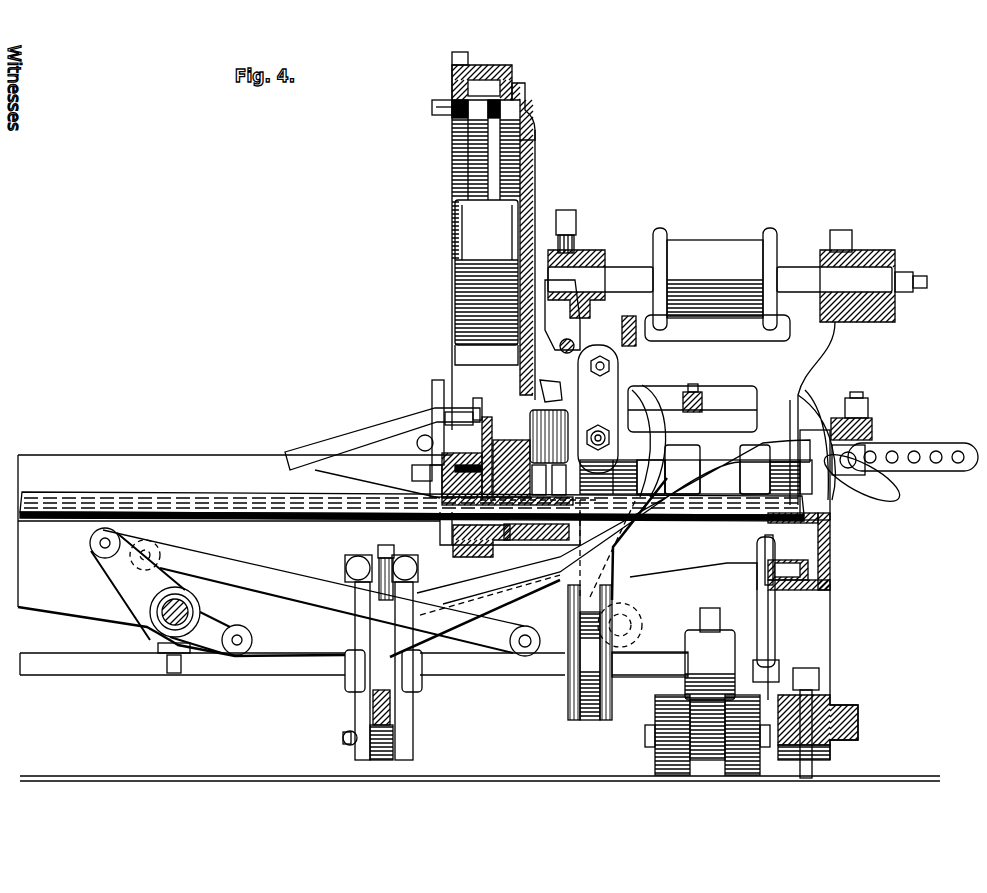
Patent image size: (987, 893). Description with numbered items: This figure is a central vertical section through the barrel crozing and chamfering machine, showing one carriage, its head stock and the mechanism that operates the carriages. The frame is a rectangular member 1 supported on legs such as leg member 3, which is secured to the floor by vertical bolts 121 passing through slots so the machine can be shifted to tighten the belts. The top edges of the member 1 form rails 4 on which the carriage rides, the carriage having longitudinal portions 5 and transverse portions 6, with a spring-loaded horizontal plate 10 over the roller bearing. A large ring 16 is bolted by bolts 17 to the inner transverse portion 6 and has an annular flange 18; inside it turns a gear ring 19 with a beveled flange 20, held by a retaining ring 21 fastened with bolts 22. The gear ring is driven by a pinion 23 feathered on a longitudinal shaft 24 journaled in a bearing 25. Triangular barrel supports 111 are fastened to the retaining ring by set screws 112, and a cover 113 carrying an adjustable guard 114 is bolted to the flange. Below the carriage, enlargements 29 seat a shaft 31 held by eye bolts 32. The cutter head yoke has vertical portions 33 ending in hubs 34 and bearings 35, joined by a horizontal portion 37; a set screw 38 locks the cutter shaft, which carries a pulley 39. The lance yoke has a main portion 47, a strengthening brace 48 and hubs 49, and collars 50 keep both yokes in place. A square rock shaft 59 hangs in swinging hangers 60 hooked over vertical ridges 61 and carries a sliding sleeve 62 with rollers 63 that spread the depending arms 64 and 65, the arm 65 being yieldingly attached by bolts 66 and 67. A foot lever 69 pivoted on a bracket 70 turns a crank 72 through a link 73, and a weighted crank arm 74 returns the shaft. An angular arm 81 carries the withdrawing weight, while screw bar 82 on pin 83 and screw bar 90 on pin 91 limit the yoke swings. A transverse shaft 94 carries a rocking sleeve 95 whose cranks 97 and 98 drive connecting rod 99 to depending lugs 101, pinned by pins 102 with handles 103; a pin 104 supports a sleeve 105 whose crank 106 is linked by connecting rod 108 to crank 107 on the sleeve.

The rectangular member 1 is at (148, 470).
The leg member 3 is at (813, 636).
The rails 4 is at (378, 444).
The longitudinal portions 5 is at (692, 409).
The transverse portions 6 is at (507, 461).
The horizontal plate 10 is at (560, 395).
The ring 16 is at (490, 70).
The bolts 17 is at (598, 409).
The annular flange 18 is at (522, 91).
The gear ring 19 is at (454, 96).
The flange 20 is at (520, 132).
The retaining ring 21 is at (452, 70).
The bolts 22 is at (432, 108).
The pinion 23 is at (458, 556).
The longitudinal shaft 24 is at (318, 521).
The bearing 25 is at (525, 543).
The enlargements 29 is at (549, 452).
The shaft 31 is at (858, 478).
The eye bolts 32 is at (540, 400).
The vertical portions 33 is at (715, 412).
The hubs 34 is at (696, 476).
The bearings 35 is at (721, 266).
The horizontal portion 37 is at (717, 338).
The set screw 38 is at (917, 273).
The pulley 39 is at (715, 279).
The main portion 47 is at (649, 441).
The strengthening brace 48 is at (806, 400).
The hubs 49 is at (836, 518).
The collars 50 is at (717, 461).
The rock shaft 59 is at (354, 664).
The swinging hangers 60 is at (757, 608).
The vertical ridges 61 is at (786, 560).
The sleeve 62 is at (650, 664).
The rollers 63 is at (575, 630).
The arm 64 is at (625, 567).
The arm 65 is at (590, 666).
The bolt 66 is at (597, 451).
The bolt 67 is at (610, 364).
The foot lever 69 is at (390, 700).
The bracket 70 is at (343, 738).
The crank 72 is at (355, 663).
The link 73 is at (405, 667).
The weighted crank arm 74 is at (707, 691).
The angular arm 81 is at (638, 334).
The screw bar 82 is at (578, 342).
The pin 83 is at (562, 315).
The screw bar 90 is at (695, 386).
The pin 91 is at (703, 398).
The transverse shaft 94 is at (160, 618).
The sleeve 95 is at (195, 608).
The crank 97 is at (205, 640).
The crank 98 is at (165, 560).
The connecting rod 99 is at (613, 527).
The depending lugs 101 is at (874, 448).
The pins 102 is at (815, 430).
The handle 103 is at (896, 492).
The pin 104 is at (642, 610).
The sleeve 105 is at (632, 628).
The crank 106 is at (535, 625).
The crank 107 is at (118, 573).
The connecting rod 108 is at (313, 591).
The barrel supports 111 is at (350, 442).
The set screws 112 is at (406, 450).
The cover 113 is at (534, 165).
The adjustable guard 114 is at (486, 282).
The vertical bolts 121 is at (812, 768).